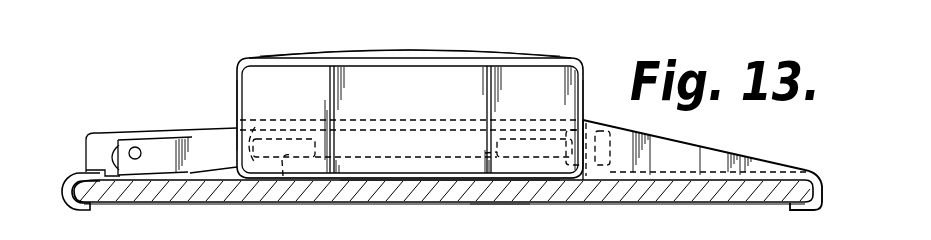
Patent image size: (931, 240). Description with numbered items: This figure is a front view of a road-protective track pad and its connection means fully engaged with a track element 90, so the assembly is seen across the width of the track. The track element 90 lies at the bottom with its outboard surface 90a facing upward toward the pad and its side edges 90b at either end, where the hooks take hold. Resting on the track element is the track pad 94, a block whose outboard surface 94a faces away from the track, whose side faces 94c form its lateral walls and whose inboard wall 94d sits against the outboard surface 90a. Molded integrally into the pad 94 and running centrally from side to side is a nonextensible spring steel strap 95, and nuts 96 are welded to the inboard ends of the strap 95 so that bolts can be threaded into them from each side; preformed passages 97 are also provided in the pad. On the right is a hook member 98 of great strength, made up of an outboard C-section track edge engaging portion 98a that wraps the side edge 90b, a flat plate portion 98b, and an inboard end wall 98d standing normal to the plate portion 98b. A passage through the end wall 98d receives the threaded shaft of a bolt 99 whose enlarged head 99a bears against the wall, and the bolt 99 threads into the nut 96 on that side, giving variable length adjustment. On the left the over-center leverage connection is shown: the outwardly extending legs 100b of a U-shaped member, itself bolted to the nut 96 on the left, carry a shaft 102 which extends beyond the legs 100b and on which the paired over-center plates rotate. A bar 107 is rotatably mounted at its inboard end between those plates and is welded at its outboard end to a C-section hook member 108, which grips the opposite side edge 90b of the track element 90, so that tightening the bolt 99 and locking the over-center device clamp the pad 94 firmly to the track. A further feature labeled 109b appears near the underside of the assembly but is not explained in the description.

The base plate 90 is at (350, 204).
The upper surface of base plate 90a is at (437, 181).
The end flange of base plate 90b is at (820, 203).
The cover 94 is at (293, 53).
The top wall of cover 94a is at (426, 52).
The end walls of cover 94c is at (237, 74).
The bottom edge of cover 94d is at (403, 182).
The compartment 95 is at (392, 102).
The latch member 96 is at (248, 130).
The latch recess 97 is at (485, 153).
The ramp member 98 is at (829, 170).
The end wall of ramp member 98a is at (823, 195).
The inclined surface of ramp member 98b is at (683, 172).
The inner wall of ramp member 98d is at (585, 122).
The latch slot 99 is at (533, 138).
The latch slot in ramp 99a is at (612, 140).
The lever arm 100b is at (197, 137).
The pivot pin 102 is at (137, 146).
The bracket 107 is at (87, 145).
The hook 108 is at (82, 212).
The bottom surface 109b is at (502, 222).